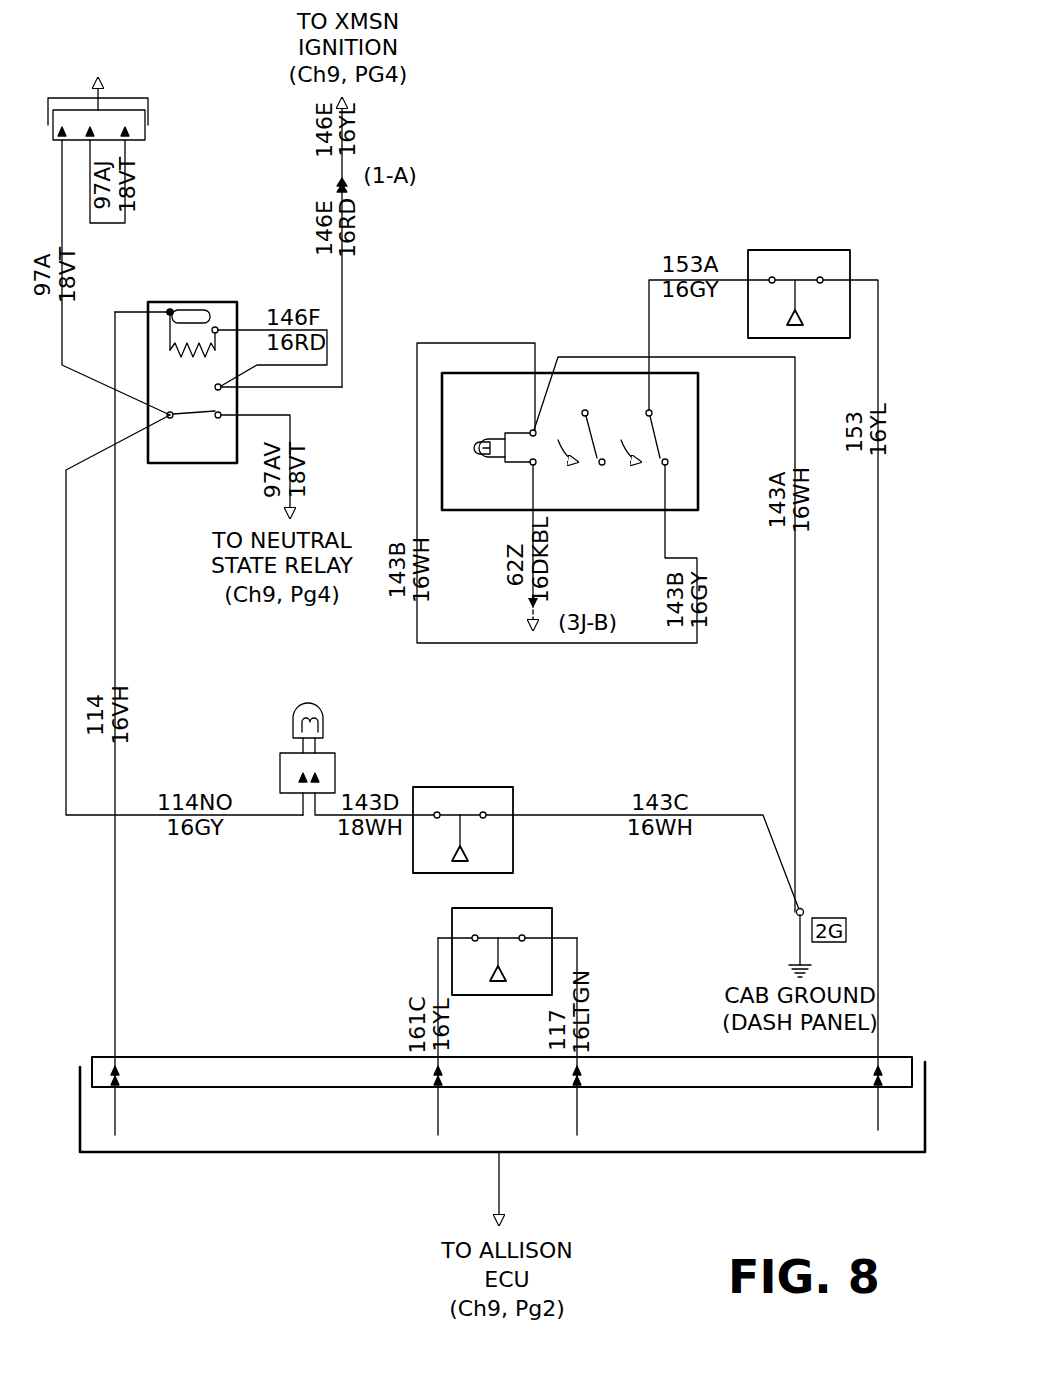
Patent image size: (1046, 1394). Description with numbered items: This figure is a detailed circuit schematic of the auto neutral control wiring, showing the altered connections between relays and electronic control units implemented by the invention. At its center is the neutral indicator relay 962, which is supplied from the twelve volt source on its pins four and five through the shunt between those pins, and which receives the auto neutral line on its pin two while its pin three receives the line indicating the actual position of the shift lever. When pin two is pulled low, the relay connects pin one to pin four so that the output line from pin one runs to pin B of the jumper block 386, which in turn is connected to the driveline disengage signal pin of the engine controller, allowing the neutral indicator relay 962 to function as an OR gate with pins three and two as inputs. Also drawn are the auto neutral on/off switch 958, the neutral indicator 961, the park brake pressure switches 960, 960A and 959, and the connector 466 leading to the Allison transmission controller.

The jumper block 386 is at (137, 109).
The neutral indicator relay 962 is at (193, 332).
The auto neutral on/off switch 958 is at (570, 387).
The 5-20 PSI park brake switch 960 is at (797, 256).
The neutral indicator 961 is at (338, 715).
The 5-20 PSI park brake to panel light feed switch 960A is at (523, 771).
The 5-20 PSI park brake switch 959 is at (422, 978).
The connector to Allison ECU 466 is at (491, 1121).